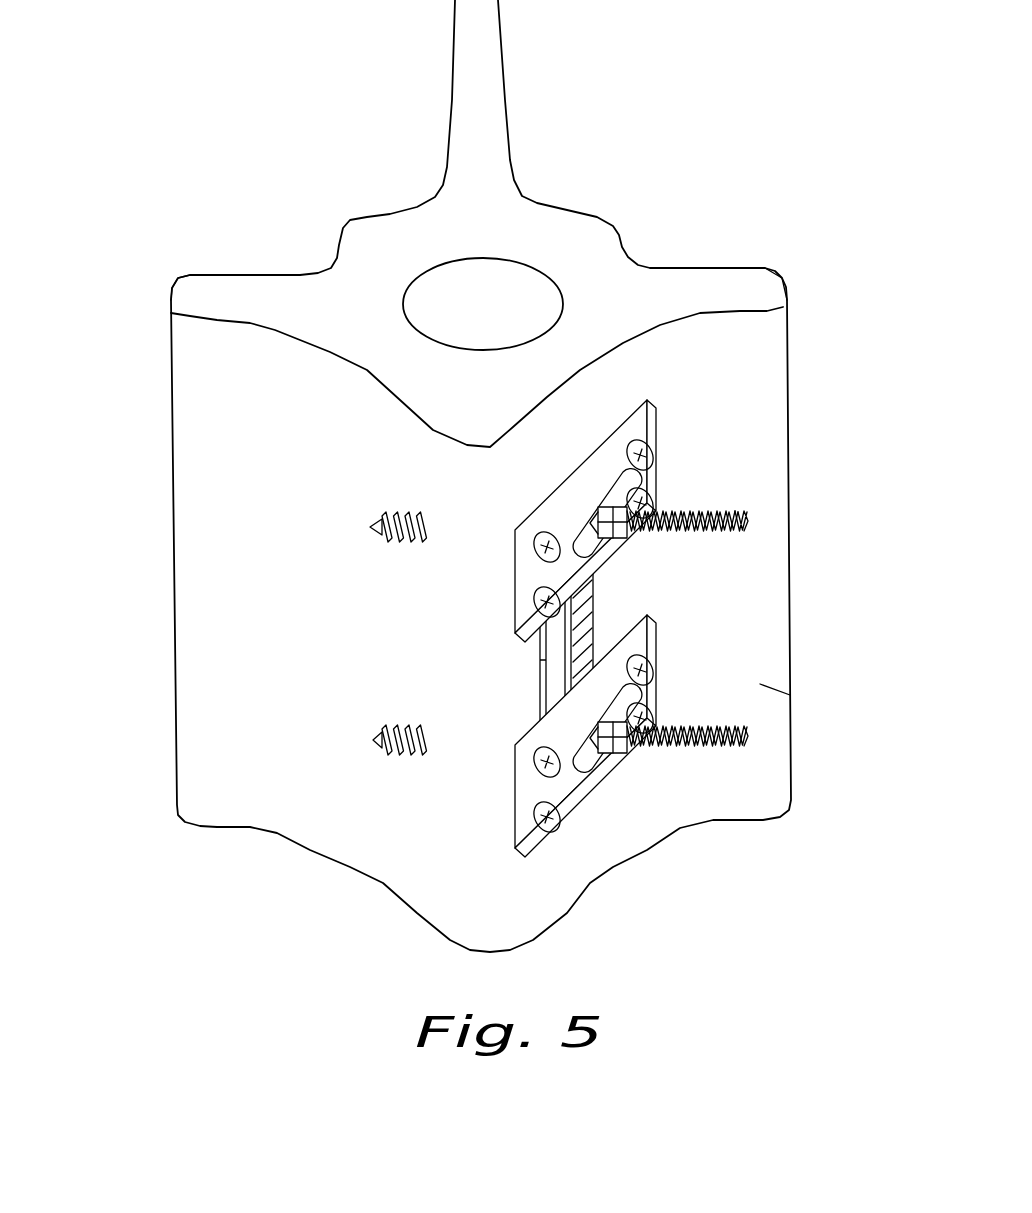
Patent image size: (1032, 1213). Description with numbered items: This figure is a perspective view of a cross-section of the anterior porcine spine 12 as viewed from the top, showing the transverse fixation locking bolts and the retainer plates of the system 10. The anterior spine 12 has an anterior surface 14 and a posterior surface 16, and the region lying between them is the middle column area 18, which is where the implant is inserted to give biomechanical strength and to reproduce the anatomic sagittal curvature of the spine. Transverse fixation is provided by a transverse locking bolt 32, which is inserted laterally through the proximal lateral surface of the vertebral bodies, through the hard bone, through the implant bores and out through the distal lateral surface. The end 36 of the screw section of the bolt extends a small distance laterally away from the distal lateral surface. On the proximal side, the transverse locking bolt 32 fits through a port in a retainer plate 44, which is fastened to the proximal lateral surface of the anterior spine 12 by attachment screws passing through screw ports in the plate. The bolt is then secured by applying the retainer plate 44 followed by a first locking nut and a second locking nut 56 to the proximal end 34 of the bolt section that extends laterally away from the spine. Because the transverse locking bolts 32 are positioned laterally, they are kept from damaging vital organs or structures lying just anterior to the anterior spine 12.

The system 10 is at (760, 684).
The anterior spine 12 is at (413, 630).
The anterior surface 14 is at (490, 447).
The posterior surface 16 is at (482, 350).
The middle column area 18 is at (493, 398).
The transverse locking bolt 32 is at (707, 510).
The proximal end 34 is at (750, 520).
The end 36 is at (370, 527).
The retainer plate 44 is at (657, 420).
The second locking nut 56 is at (657, 497).